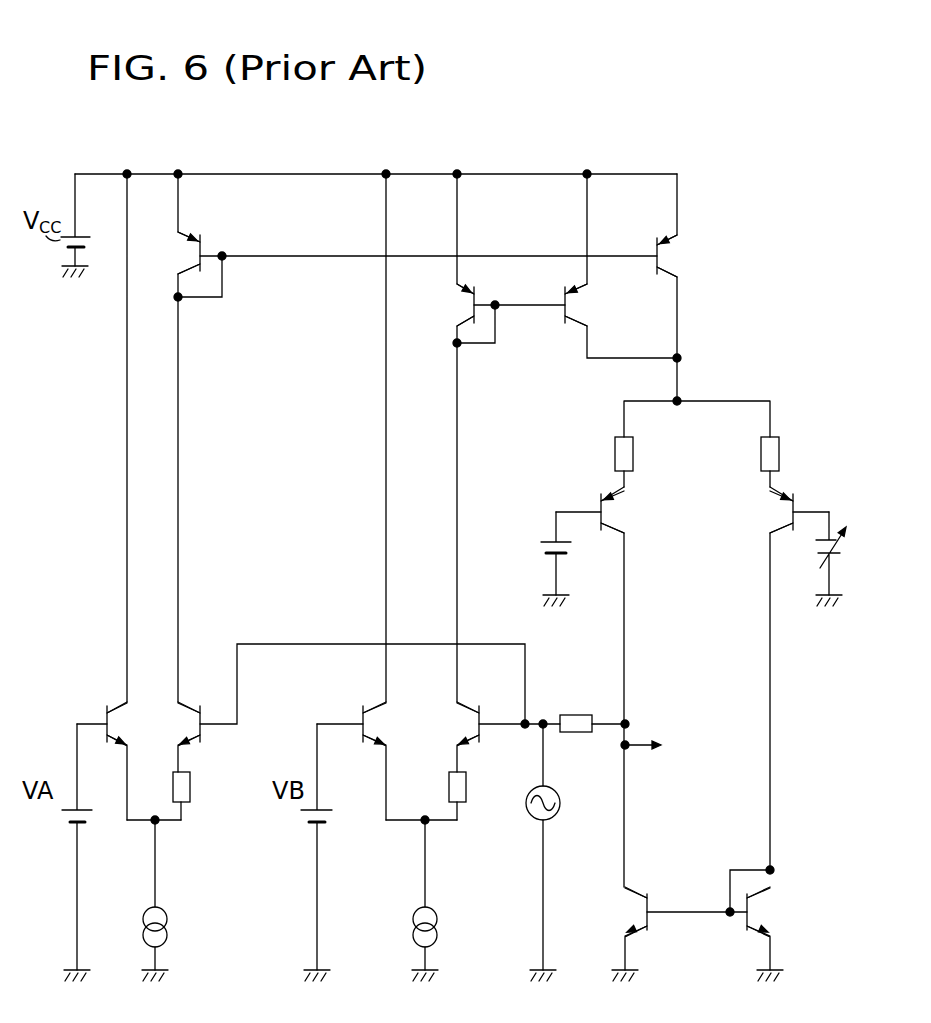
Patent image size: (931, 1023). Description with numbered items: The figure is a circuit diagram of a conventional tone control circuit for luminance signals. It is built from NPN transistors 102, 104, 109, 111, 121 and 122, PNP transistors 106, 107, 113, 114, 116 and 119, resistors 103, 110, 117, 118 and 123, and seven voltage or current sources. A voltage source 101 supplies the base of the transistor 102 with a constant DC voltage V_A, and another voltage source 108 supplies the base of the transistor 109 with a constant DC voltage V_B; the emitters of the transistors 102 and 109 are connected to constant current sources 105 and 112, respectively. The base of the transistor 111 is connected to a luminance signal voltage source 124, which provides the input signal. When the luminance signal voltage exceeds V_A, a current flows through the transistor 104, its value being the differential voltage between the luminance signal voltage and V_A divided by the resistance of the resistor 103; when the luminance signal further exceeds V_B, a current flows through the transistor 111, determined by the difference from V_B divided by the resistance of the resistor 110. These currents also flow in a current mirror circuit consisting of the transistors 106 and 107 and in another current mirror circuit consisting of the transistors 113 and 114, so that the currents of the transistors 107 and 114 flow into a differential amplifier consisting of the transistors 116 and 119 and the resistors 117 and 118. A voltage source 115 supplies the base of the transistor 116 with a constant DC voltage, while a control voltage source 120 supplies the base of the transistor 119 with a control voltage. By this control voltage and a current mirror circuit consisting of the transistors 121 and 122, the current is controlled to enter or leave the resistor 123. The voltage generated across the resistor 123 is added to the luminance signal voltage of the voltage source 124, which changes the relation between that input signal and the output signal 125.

The voltage source 101 is at (81, 826).
The transistor 102 is at (104, 705).
The resistor 103 is at (190, 790).
The transistor 104 is at (210, 705).
The constant current source 105 is at (167, 914).
The transistor 106 is at (195, 260).
The transistor 107 is at (669, 264).
The voltage source 108 is at (312, 826).
The transistor 109 is at (360, 713).
The resistor 110 is at (466, 790).
The transistor 111 is at (492, 695).
The constant current source 112 is at (437, 914).
The transistor 113 is at (470, 317).
The transistor 114 is at (572, 310).
The voltage source 115 is at (546, 544).
The transistor 116 is at (615, 518).
The resistor 117 is at (634, 455).
The resistor 118 is at (780, 455).
The transistor 119 is at (788, 513).
The control voltage source 120 is at (836, 538).
The transistor 121 is at (757, 916).
The transistor 122 is at (637, 912).
The resistor 123 is at (576, 713).
The luminance signal voltage source 124 is at (555, 816).
The output signal 125 is at (656, 740).